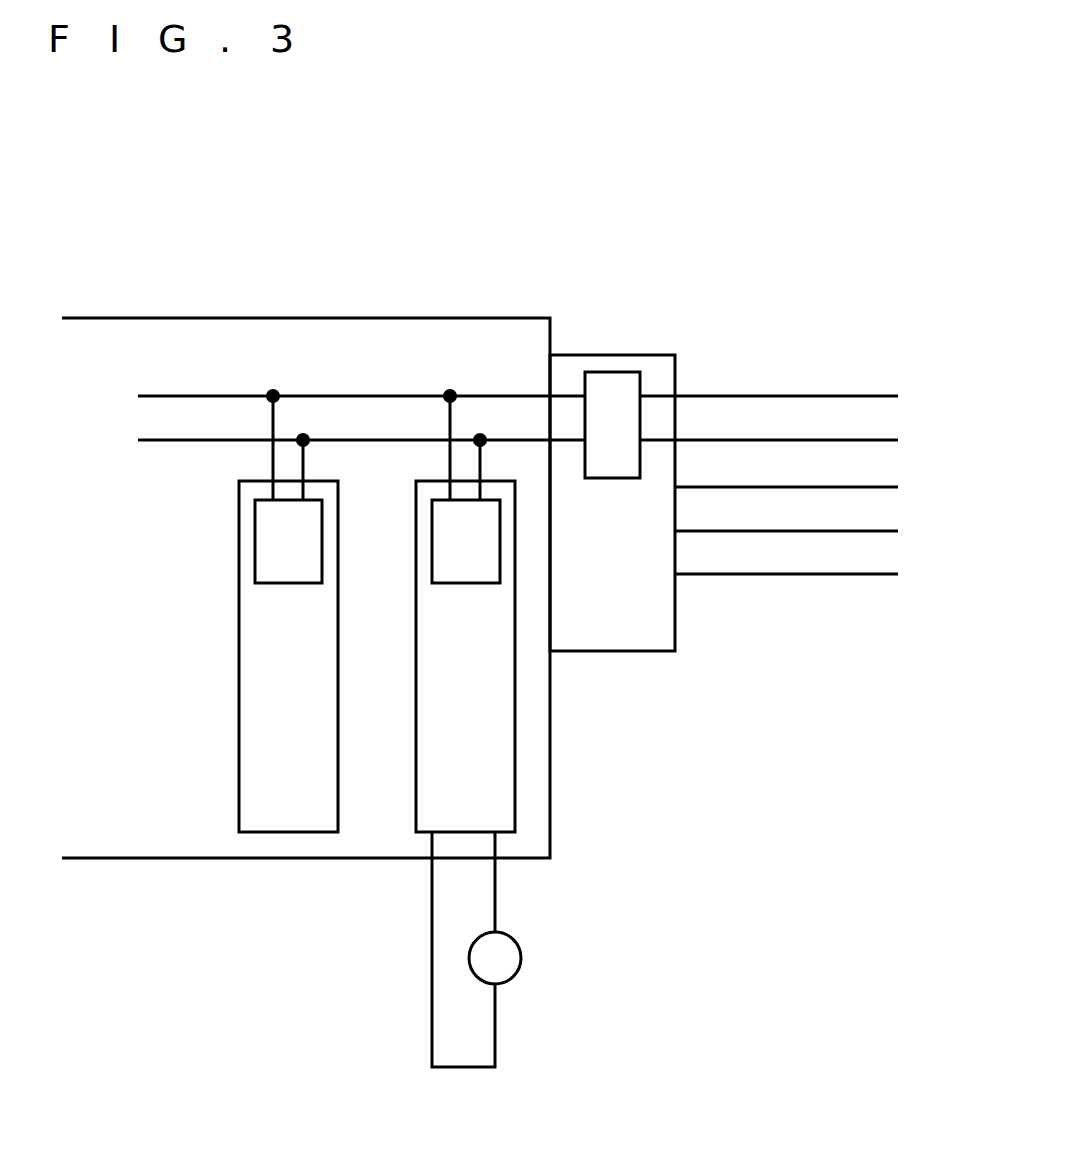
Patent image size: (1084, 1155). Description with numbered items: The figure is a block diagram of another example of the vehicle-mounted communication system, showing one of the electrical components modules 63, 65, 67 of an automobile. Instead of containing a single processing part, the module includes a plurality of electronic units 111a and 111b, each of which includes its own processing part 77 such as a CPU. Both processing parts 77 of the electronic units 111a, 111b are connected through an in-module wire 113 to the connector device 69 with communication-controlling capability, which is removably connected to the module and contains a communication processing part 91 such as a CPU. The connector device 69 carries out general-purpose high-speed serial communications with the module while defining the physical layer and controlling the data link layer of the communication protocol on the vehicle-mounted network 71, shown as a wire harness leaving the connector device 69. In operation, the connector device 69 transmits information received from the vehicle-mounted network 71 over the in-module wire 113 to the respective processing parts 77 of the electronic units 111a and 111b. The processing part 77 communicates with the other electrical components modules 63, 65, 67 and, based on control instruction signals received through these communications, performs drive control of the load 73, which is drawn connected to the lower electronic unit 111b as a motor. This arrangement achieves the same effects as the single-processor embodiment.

The in-module wire 113 is at (502, 396).
The communication processing part 91 is at (613, 372).
The connector device 69 is at (612, 652).
The vehicle-mounted network 71 is at (903, 388).
The electrical components module 63 is at (420, 588).
The electrical components module 65 is at (420, 588).
The electrical components module 67 is at (550, 802).
The load 73 is at (521, 958).
The processing part 77 is at (255, 540).
The electronic unit 111a is at (239, 804).
The electronic unit 111b is at (416, 804).